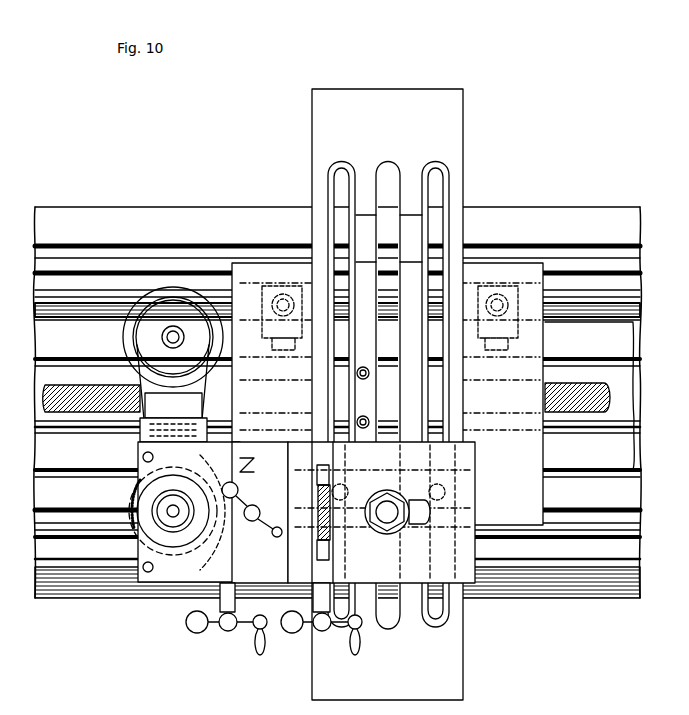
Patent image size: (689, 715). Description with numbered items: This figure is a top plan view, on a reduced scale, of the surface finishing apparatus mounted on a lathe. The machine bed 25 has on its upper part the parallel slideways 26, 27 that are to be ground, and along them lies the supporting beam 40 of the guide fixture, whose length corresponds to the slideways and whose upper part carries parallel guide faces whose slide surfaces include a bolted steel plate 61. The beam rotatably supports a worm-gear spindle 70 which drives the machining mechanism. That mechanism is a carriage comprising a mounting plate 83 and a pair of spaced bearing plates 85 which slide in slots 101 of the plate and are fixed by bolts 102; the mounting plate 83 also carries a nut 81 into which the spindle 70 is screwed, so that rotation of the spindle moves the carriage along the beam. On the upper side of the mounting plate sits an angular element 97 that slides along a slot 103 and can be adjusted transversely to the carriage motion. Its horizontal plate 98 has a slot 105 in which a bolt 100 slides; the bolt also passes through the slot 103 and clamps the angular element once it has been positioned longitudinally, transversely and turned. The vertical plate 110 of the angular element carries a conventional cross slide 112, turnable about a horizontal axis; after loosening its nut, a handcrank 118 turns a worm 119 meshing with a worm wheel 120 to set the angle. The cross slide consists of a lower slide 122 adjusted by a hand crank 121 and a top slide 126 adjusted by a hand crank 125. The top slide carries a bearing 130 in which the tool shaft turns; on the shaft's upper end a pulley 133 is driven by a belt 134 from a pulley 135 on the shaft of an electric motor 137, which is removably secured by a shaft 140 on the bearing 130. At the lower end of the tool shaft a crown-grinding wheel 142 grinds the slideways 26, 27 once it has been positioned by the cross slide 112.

The machine bed 25 is at (545, 605).
The slideway 26 is at (598, 550).
The slideway 27 is at (593, 265).
The supporting beam 40 is at (618, 380).
The steel plate 61 is at (607, 455).
The worm-gear spindle 70 is at (578, 385).
The nut 81 is at (384, 372).
The mounting plate 83 is at (452, 130).
The bearing plate 85 is at (387, 292).
The angular element 97 is at (482, 548).
The horizontal plate 98 is at (462, 570).
The bolt 100 is at (387, 522).
The slot 101 is at (343, 175).
The bolt 102 is at (336, 300).
The slot 103 is at (386, 172).
The slot 105 is at (412, 524).
The vertical plate 110 is at (299, 572).
The cross slide 112 is at (218, 635).
The handcrank 118 is at (341, 628).
The worm 119 is at (331, 540).
The worm wheel 120 is at (331, 488).
The hand crank 121 is at (254, 522).
The lower slide 122 is at (248, 455).
The hand crank 125 is at (249, 628).
The top slide 126 is at (213, 570).
The bearing 130 is at (150, 590).
The pulley 133 is at (160, 522).
The belt 134 is at (140, 436).
The pulley 135 is at (145, 337).
The electric motor 137 is at (170, 290).
The shaft 140 is at (92, 410).
The crown-grinding wheel 142 is at (131, 498).